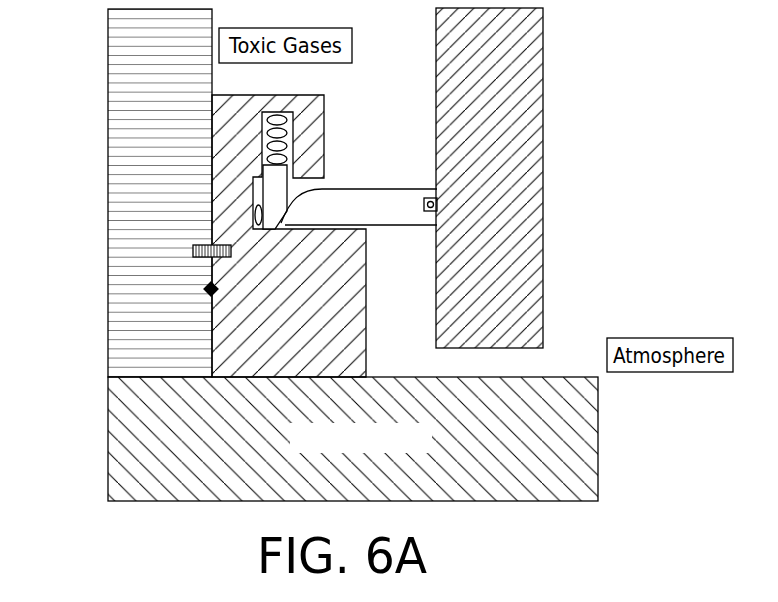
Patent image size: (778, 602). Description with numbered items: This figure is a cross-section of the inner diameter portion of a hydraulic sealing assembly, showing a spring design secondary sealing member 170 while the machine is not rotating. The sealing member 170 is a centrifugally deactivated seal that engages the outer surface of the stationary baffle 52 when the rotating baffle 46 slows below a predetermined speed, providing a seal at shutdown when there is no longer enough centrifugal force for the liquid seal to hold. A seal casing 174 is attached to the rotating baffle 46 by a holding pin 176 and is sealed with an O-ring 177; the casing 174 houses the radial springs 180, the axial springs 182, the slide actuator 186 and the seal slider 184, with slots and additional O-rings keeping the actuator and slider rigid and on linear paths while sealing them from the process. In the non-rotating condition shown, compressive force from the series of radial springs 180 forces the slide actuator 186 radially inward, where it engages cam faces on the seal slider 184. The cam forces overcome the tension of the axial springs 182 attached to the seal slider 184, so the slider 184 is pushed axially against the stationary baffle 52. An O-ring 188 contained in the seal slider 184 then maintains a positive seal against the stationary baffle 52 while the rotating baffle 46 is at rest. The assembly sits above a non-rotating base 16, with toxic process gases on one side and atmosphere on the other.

The stationary housing 16 is at (565, 452).
The rotating baffle 46 is at (117, 320).
The stationary baffle 52 is at (520, 177).
The sealing member 170 is at (235, 152).
The seal casing 174 is at (247, 337).
The holding pin 176 is at (193, 250).
The O-ring 177 is at (205, 289).
The radial springs 180 is at (264, 137).
The axial springs 182 is at (253, 217).
The seal slider 184 is at (374, 194).
The slide actuator 186 is at (275, 187).
The O-ring 188 is at (430, 197).